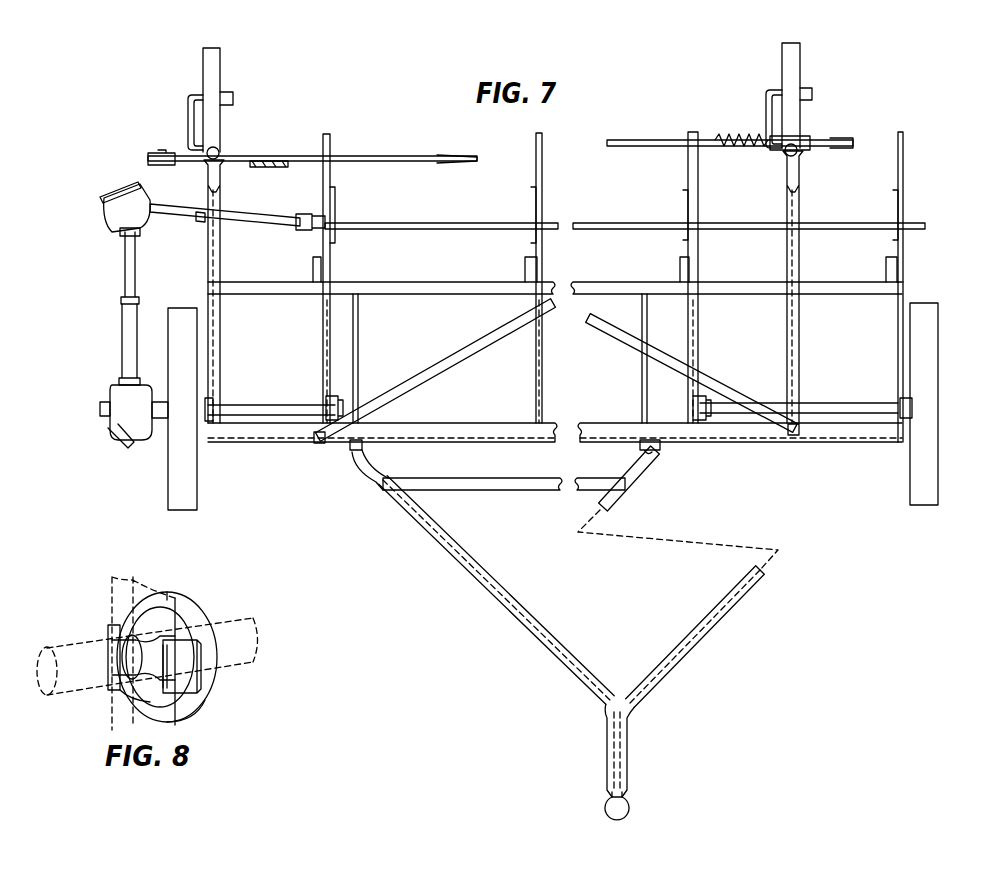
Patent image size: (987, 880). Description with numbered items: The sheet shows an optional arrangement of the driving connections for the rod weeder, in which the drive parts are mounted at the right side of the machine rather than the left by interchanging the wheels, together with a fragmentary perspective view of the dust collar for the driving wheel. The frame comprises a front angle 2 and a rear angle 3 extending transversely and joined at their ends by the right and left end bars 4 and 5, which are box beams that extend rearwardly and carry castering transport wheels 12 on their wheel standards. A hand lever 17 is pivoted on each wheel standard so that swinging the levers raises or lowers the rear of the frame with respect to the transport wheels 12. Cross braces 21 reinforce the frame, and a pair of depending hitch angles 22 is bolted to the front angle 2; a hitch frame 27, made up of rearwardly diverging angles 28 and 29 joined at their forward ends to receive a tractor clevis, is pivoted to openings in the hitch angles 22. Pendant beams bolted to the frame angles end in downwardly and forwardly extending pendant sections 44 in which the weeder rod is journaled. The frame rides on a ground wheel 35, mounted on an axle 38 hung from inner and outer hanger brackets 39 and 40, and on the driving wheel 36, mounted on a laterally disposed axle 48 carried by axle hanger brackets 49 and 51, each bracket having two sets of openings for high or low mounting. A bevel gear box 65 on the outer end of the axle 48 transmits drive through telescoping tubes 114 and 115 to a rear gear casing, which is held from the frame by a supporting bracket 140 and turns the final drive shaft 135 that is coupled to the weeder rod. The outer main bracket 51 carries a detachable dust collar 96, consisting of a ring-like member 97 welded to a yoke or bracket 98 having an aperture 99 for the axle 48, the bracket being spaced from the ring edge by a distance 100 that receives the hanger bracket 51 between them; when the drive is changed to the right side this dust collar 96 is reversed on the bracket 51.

In FIG. 7, the front angle 2 is at (590, 429).
In FIG. 7, the rear angle 3 is at (548, 286).
In FIG. 7, the right end bar 4 is at (784, 186).
In FIG. 7, the left end bar 5 is at (206, 195).
In FIG. 7, the transport wheel 12 is at (214, 72).
In FIG. 7, the hand lever 17 is at (362, 156).
In FIG. 7, the cross brace 21 is at (446, 362).
In FIG. 7, the hitch angle 22 is at (380, 442).
In FIG. 7, the hitch frame 27 is at (500, 623).
In FIG. 7, the rearwardly diverging angle 28 is at (554, 646).
In FIG. 7, the rearwardly diverging angle 29 is at (722, 604).
In FIG. 7, the ground wheel 35 is at (926, 481).
In FIG. 7, the driving wheel 36 is at (170, 474).
In FIG. 7, the axle 38 is at (825, 405).
In FIG. 7, the inner hanger bracket 39 is at (692, 395).
In FIG. 7, the outer hanger bracket 40 is at (912, 403).
In FIG. 7, the pendant section 44 is at (330, 172).
In FIG. 7, the axle 48 is at (262, 405).
In FIG. 8, the axle 48 is at (252, 626).
In FIG. 7, the axle hanger bracket 49 is at (328, 403).
In FIG. 7, the axle hanger bracket 51 is at (210, 408).
In FIG. 8, the axle hanger bracket 51 is at (132, 579).
In FIG. 7, the gear box 65 is at (112, 426).
In FIG. 8, the dust collar 96 is at (193, 596).
In FIG. 8, the ring-like member 97 is at (184, 714).
In FIG. 8, the yoke or bracket 98 is at (120, 699).
In FIG. 8, the aperture 99 is at (110, 638).
In FIG. 8, the spacing 100 is at (188, 632).
In FIG. 7, the forward tube 114 is at (128, 346).
In FIG. 7, the rear tube 115 is at (124, 280).
In FIG. 7, the final drive shaft 135 is at (286, 220).
In FIG. 7, the supporting bracket 140 is at (184, 222).